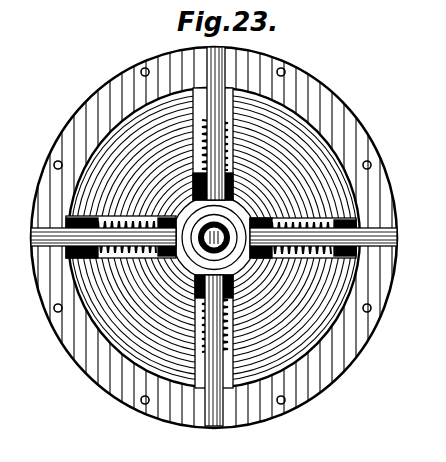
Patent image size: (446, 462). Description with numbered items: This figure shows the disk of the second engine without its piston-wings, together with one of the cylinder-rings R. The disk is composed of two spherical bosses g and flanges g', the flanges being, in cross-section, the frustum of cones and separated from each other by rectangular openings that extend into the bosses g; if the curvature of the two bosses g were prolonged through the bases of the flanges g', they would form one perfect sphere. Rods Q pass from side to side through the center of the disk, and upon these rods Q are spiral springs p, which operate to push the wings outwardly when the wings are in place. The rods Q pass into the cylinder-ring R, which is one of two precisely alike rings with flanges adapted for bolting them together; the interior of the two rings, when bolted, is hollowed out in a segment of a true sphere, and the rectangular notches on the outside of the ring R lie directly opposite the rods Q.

The rods Q is at (210, 250).
The cylinder-ring R is at (118, 114).
The flanges g' is at (214, 238).
The spherical boss g is at (213, 235).
The spiral springs p is at (134, 222).
The slot blocks a is at (211, 238).